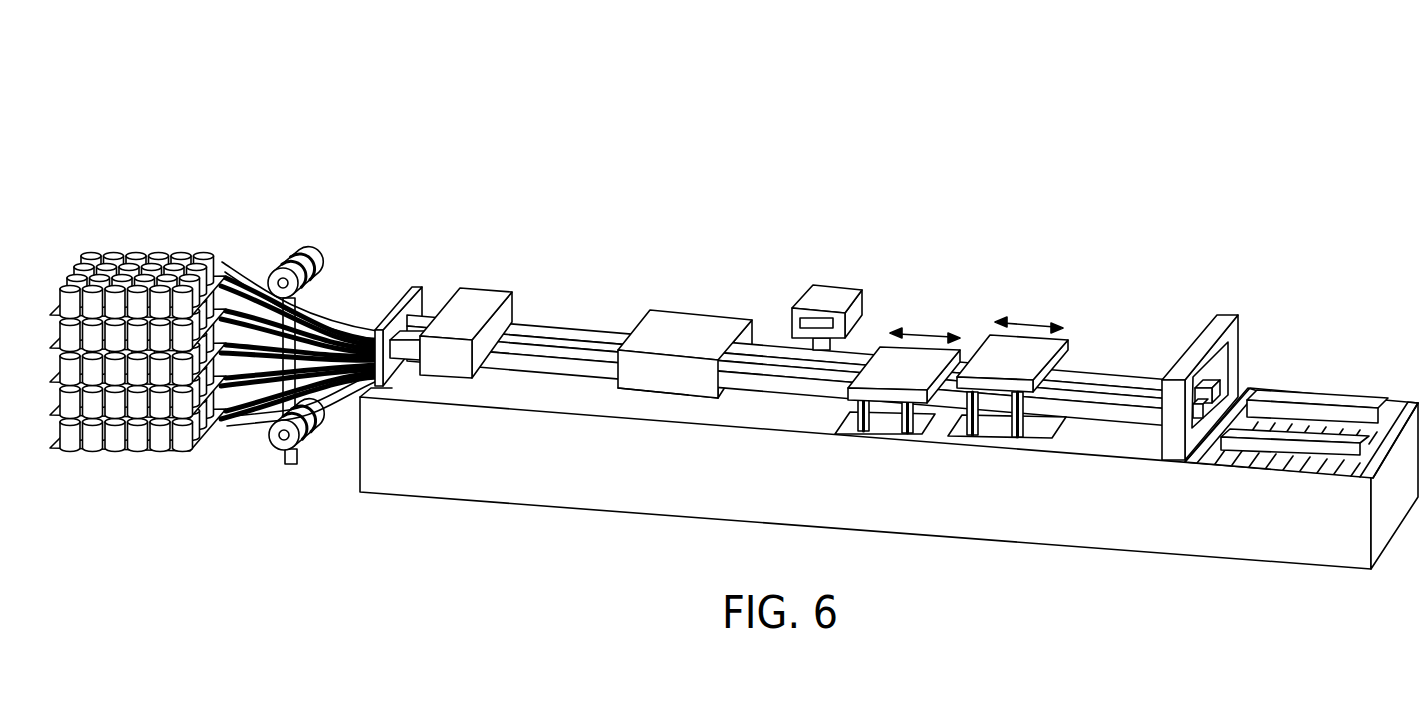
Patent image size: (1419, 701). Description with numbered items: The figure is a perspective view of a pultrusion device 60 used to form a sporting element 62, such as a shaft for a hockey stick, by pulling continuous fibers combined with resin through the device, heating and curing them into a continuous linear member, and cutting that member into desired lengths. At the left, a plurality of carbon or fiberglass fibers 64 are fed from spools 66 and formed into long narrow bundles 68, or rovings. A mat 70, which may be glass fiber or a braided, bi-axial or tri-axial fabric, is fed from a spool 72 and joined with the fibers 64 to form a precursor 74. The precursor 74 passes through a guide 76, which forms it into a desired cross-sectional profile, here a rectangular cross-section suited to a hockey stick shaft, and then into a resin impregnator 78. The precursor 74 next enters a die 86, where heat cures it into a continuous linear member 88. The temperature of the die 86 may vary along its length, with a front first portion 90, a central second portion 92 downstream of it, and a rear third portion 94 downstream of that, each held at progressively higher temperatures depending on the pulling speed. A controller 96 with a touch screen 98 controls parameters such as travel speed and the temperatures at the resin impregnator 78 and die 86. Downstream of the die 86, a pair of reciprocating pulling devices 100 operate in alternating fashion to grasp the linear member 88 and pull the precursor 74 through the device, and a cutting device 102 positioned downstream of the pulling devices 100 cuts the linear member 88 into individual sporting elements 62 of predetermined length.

The pultrusion device 60 is at (931, 107).
The sporting element 62 is at (1282, 452).
The fibers 64 is at (233, 433).
The spools 66 is at (91, 445).
The bundles 68 is at (255, 281).
The mat 70 is at (338, 392).
The spool 72 is at (275, 455).
The precursor 74 is at (407, 362).
The guide 76 is at (405, 312).
The resin impregnator 78 is at (475, 297).
The die 86 is at (668, 324).
The continuous linear member 88 is at (765, 385).
The first portion 90 is at (620, 393).
The second portion 92 is at (662, 392).
The third portion 94 is at (710, 395).
The controller 96 is at (838, 302).
The touch screen 98 is at (820, 318).
The pulling devices 100 is at (884, 380).
The cutting device 102 is at (1223, 323).